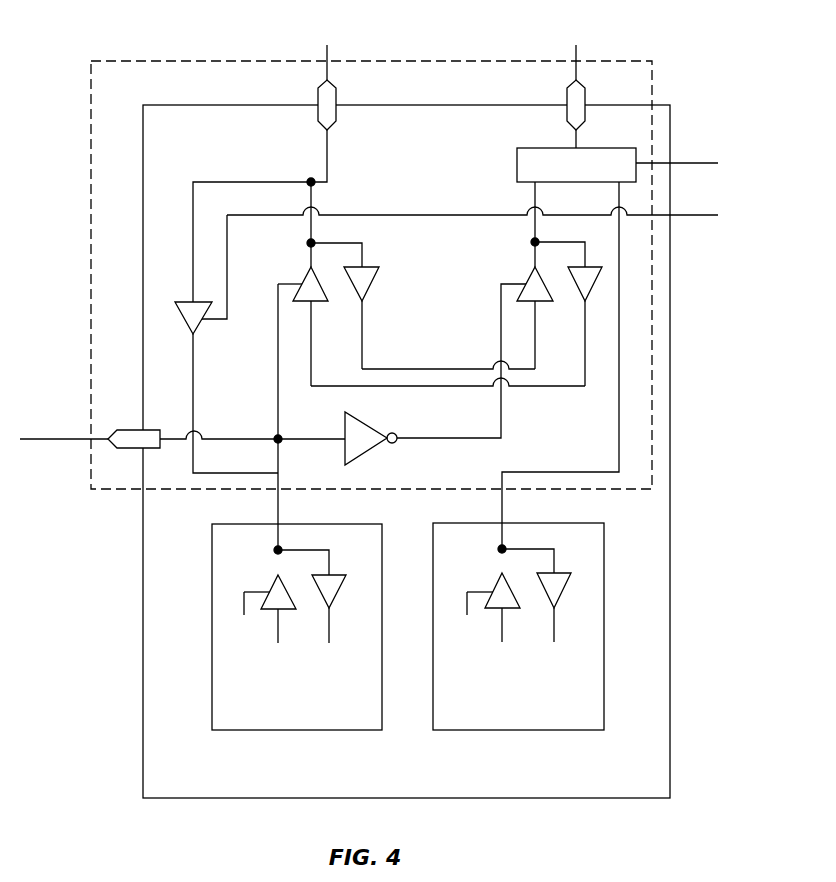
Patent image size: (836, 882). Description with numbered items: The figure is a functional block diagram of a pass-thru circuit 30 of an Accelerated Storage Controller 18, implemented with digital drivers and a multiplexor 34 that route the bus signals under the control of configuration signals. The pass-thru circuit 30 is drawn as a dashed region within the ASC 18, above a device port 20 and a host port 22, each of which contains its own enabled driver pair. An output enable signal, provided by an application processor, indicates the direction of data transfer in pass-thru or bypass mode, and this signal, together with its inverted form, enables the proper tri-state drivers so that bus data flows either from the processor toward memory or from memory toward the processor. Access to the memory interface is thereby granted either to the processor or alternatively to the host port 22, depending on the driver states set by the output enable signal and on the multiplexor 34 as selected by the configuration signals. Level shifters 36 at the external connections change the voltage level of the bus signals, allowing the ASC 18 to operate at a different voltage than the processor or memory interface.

The Accelerated Storage Controller 18 is at (613, 788).
The device port 20 is at (287, 721).
The host port 22 is at (509, 721).
The pass-thru circuit 30 is at (619, 60).
The multiplexor 34 is at (516, 175).
The level shifters 36 is at (318, 114).